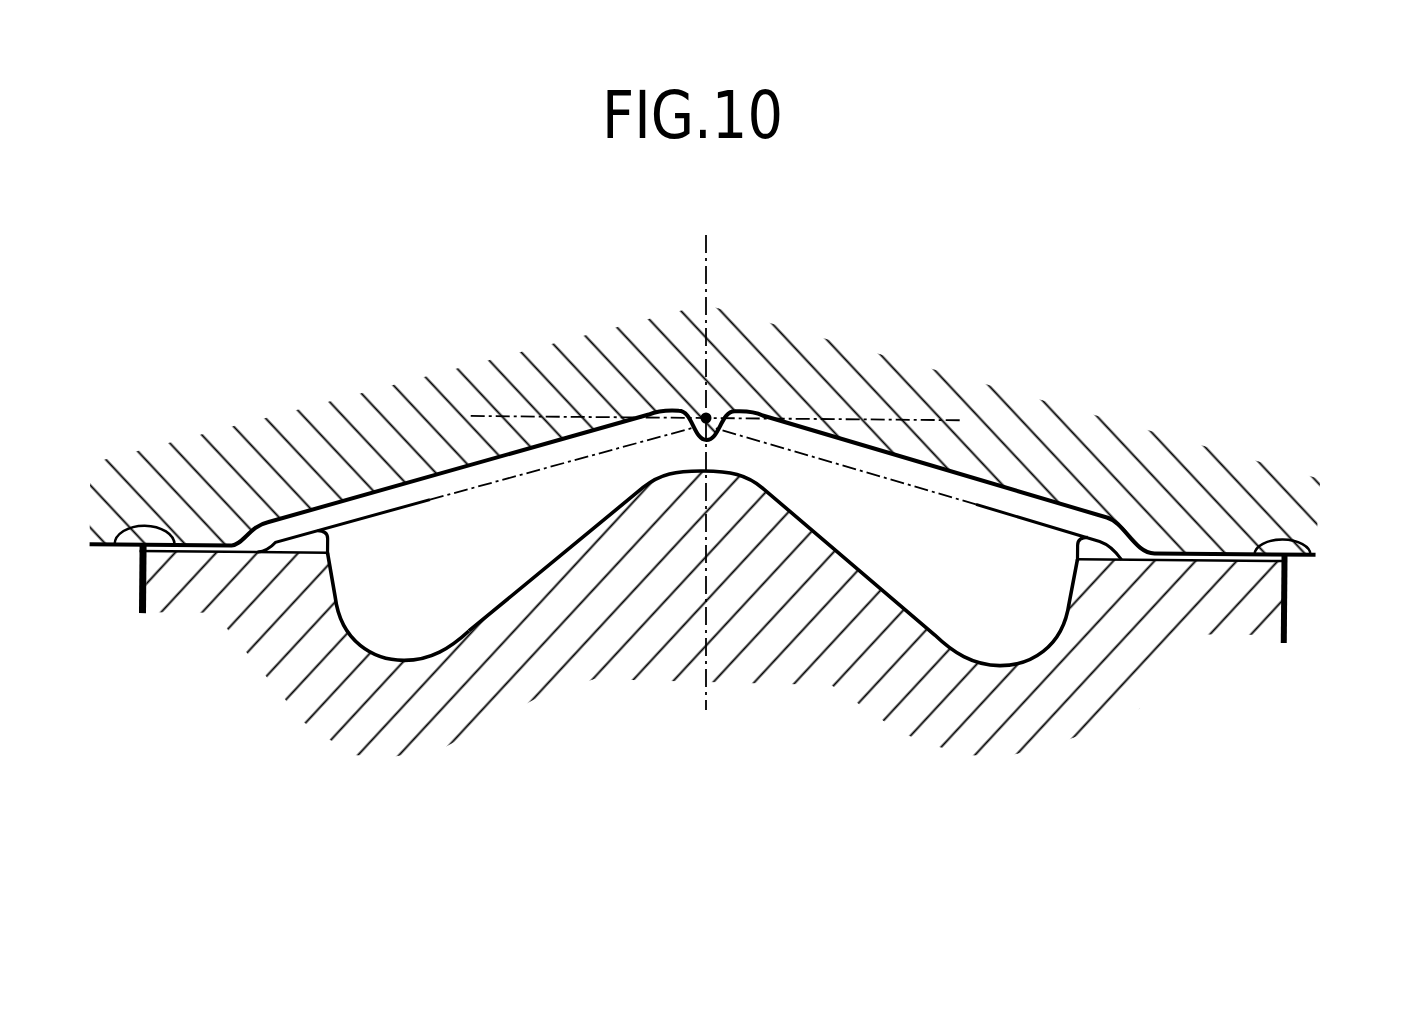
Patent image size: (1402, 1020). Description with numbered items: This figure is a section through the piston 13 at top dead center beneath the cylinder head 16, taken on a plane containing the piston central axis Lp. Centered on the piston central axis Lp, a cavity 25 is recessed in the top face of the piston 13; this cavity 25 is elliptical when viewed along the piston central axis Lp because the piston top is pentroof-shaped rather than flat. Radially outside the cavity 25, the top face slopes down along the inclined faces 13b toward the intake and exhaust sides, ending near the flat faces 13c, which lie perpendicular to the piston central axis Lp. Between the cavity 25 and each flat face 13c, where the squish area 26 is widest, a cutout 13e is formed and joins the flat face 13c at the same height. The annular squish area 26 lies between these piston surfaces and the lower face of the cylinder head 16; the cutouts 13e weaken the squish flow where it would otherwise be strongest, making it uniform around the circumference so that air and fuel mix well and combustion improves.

The piston 13 is at (778, 592).
The inclined face 13b is at (338, 525).
The flat face 13c is at (112, 545).
The cutout 13e is at (302, 540).
The cylinder head 16 is at (827, 393).
The cavity 25 is at (517, 549).
The squish area 26 is at (215, 553).
The piston central axis Lp is at (707, 255).